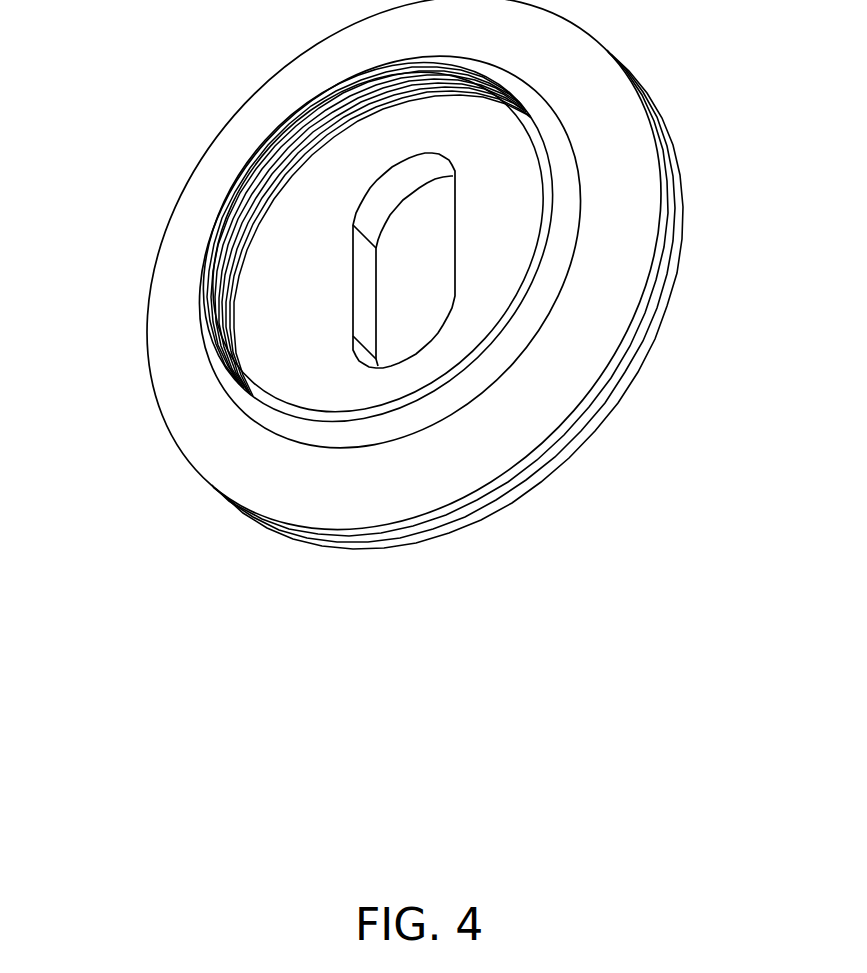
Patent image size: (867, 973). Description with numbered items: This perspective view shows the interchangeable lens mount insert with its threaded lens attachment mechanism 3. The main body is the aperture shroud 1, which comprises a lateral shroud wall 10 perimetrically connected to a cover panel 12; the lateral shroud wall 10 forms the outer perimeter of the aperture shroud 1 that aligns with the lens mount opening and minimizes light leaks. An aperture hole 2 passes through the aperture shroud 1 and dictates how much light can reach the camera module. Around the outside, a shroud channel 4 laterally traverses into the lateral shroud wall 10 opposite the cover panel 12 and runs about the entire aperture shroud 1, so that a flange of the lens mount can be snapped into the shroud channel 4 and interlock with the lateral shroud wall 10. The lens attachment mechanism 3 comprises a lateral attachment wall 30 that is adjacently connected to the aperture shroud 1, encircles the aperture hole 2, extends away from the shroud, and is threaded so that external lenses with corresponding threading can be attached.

The aperture shroud 1 is at (403, 316).
The aperture hole 2 is at (380, 260).
The lens attachment mechanism 3 is at (403, 316).
The shroud channel 4 is at (519, 482).
The lateral shroud wall 10 is at (647, 292).
The cover panel 12 is at (403, 177).
The lateral attachment wall 30 is at (377, 437).